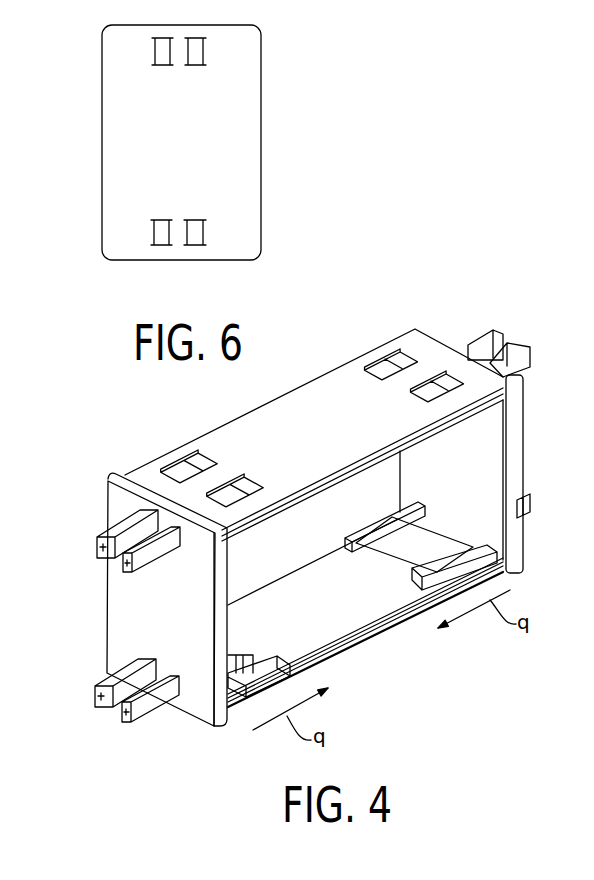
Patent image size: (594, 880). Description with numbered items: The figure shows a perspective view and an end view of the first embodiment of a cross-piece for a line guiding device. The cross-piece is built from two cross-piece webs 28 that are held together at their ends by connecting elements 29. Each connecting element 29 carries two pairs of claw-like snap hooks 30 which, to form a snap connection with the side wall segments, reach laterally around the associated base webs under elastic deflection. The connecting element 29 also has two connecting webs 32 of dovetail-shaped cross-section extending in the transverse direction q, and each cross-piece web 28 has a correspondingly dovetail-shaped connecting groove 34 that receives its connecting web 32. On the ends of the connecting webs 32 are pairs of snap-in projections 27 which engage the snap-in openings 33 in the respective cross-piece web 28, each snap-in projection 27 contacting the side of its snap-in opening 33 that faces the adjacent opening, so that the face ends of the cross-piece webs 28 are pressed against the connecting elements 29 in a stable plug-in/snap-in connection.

In FIG. 4, the snap-in projection 27 is at (228, 492).
In FIG. 4, the cross-piece web 28 is at (314, 447).
In FIG. 6, the connecting element 29 is at (167, 142).
In FIG. 4, the connecting element 29 is at (170, 621).
In FIG. 6, the snap hook 30 is at (190, 240).
In FIG. 4, the snap hook 30 is at (530, 355).
In FIG. 4, the connecting web 32 is at (425, 540).
In FIG. 4, the snap-in opening 33 is at (422, 392).
In FIG. 4, the connecting groove 34 is at (383, 552).